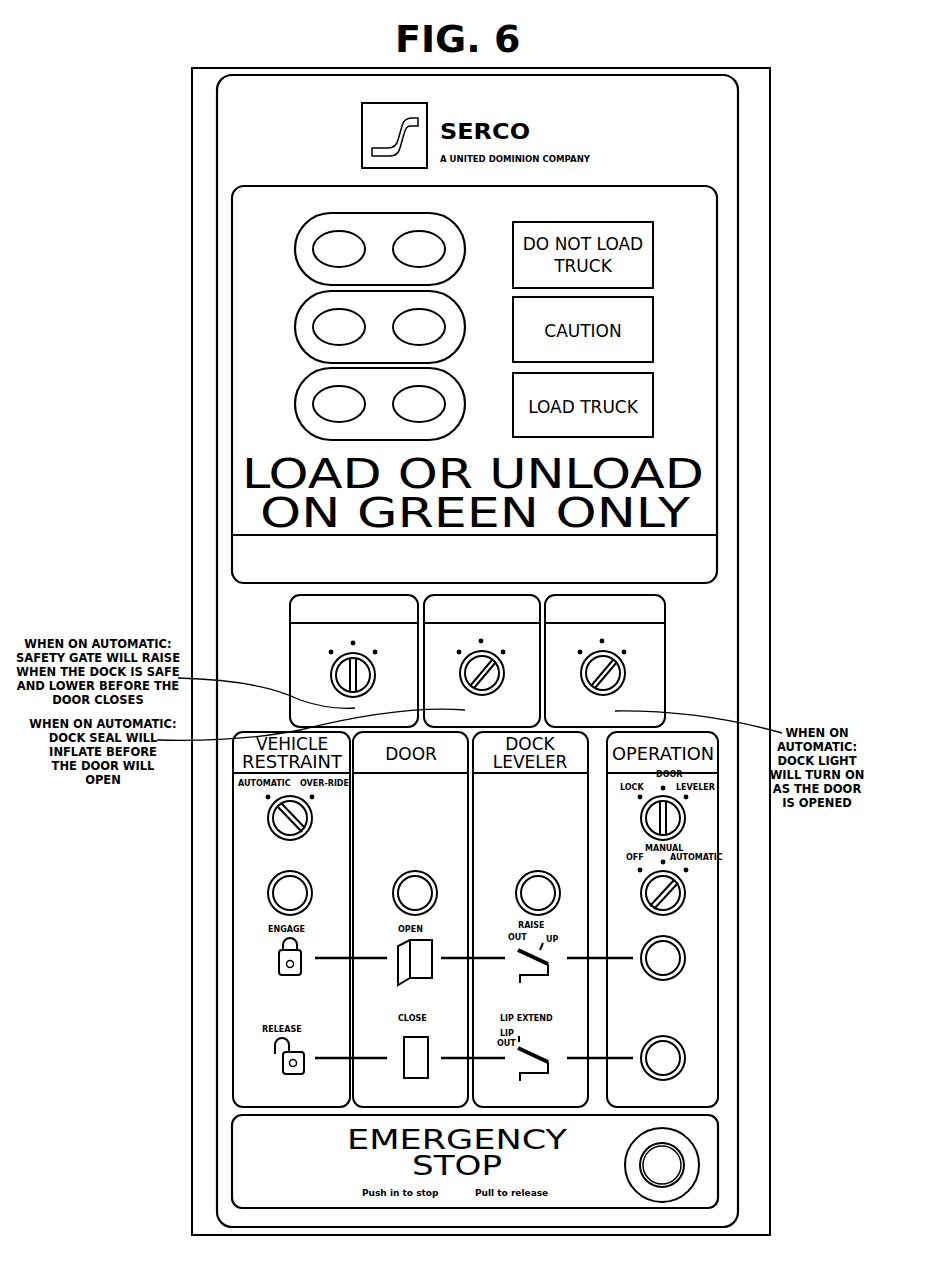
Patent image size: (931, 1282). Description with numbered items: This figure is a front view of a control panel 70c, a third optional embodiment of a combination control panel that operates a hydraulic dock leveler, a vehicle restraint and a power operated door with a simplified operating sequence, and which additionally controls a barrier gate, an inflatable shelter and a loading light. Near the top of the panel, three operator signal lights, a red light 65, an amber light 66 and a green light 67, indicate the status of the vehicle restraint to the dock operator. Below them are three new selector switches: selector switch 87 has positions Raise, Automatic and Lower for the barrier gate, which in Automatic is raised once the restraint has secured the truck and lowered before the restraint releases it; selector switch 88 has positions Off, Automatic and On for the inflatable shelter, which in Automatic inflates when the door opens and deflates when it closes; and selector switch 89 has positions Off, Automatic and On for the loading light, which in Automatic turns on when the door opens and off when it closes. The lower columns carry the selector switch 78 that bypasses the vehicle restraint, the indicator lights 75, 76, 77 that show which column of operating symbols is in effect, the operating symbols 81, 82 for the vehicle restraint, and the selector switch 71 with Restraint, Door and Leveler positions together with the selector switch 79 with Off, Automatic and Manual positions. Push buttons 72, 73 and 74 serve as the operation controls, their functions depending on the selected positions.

The control panel 70c is at (192, 100).
The red light 65 is at (295, 261).
The amber light 66 is at (295, 336).
The green light 67 is at (295, 413).
The selector switch 87 is at (340, 683).
The selector switch 88 is at (482, 697).
The selector switch 89 is at (625, 673).
The selector switch 78 is at (268, 823).
The indicator light 75 is at (268, 894).
The indicator light 76 is at (418, 871).
The indicator light 77 is at (535, 871).
The selector switch 71 is at (685, 818).
The selector switch 79 is at (685, 890).
The operating symbol 81 is at (278, 968).
The operating symbol 82 is at (282, 1067).
The push button 72 is at (685, 955).
The push button 73 is at (685, 1056).
The push button 74 is at (700, 1165).